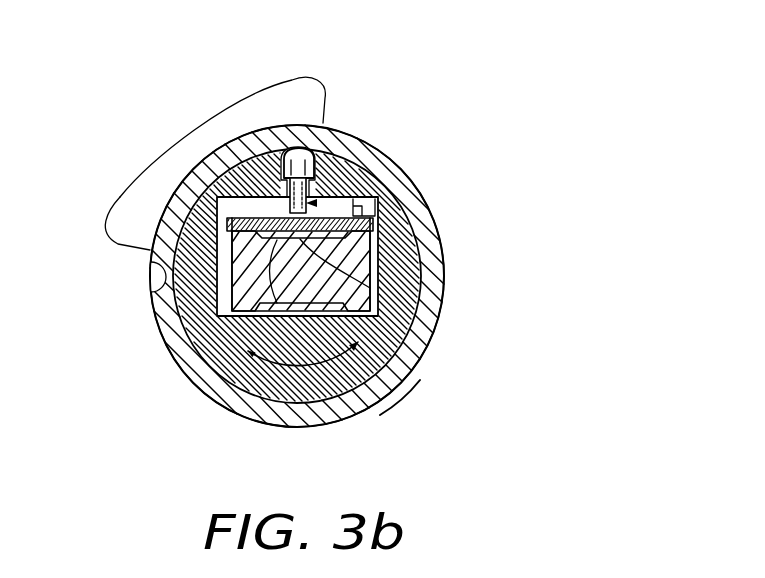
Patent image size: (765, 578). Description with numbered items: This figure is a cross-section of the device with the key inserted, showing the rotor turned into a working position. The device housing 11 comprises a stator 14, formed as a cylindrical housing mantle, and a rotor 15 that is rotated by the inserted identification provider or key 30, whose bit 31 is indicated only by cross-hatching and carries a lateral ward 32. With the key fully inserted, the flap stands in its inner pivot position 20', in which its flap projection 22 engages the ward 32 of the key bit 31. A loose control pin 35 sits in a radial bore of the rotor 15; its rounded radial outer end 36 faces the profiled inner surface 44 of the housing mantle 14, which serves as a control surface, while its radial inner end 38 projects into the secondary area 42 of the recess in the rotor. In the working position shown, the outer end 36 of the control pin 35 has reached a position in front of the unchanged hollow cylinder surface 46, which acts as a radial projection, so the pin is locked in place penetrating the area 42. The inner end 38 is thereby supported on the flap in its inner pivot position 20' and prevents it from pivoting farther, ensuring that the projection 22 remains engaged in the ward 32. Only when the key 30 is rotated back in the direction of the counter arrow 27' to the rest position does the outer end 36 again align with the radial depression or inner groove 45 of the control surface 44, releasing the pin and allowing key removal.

The device housing 11 is at (447, 198).
The stator 14 is at (432, 350).
The rotor 15 is at (440, 304).
The inner pivot position of the flap 20' is at (397, 243).
The flap projection 22 is at (240, 317).
The counter arrow 27' is at (320, 411).
The identification provider 30 is at (236, 306).
The bit 31 is at (243, 282).
The ward 32 is at (258, 390).
The control pin 35 is at (343, 190).
The radial outer end of control pin 36 is at (300, 142).
The radial inner end of control pin 38 is at (408, 367).
The secondary area of recess 42 is at (314, 203).
The profiled inner surface of housing mantle 44 is at (340, 158).
The radial depression 45 is at (150, 270).
The hollow cylinder surface 46 is at (196, 140).